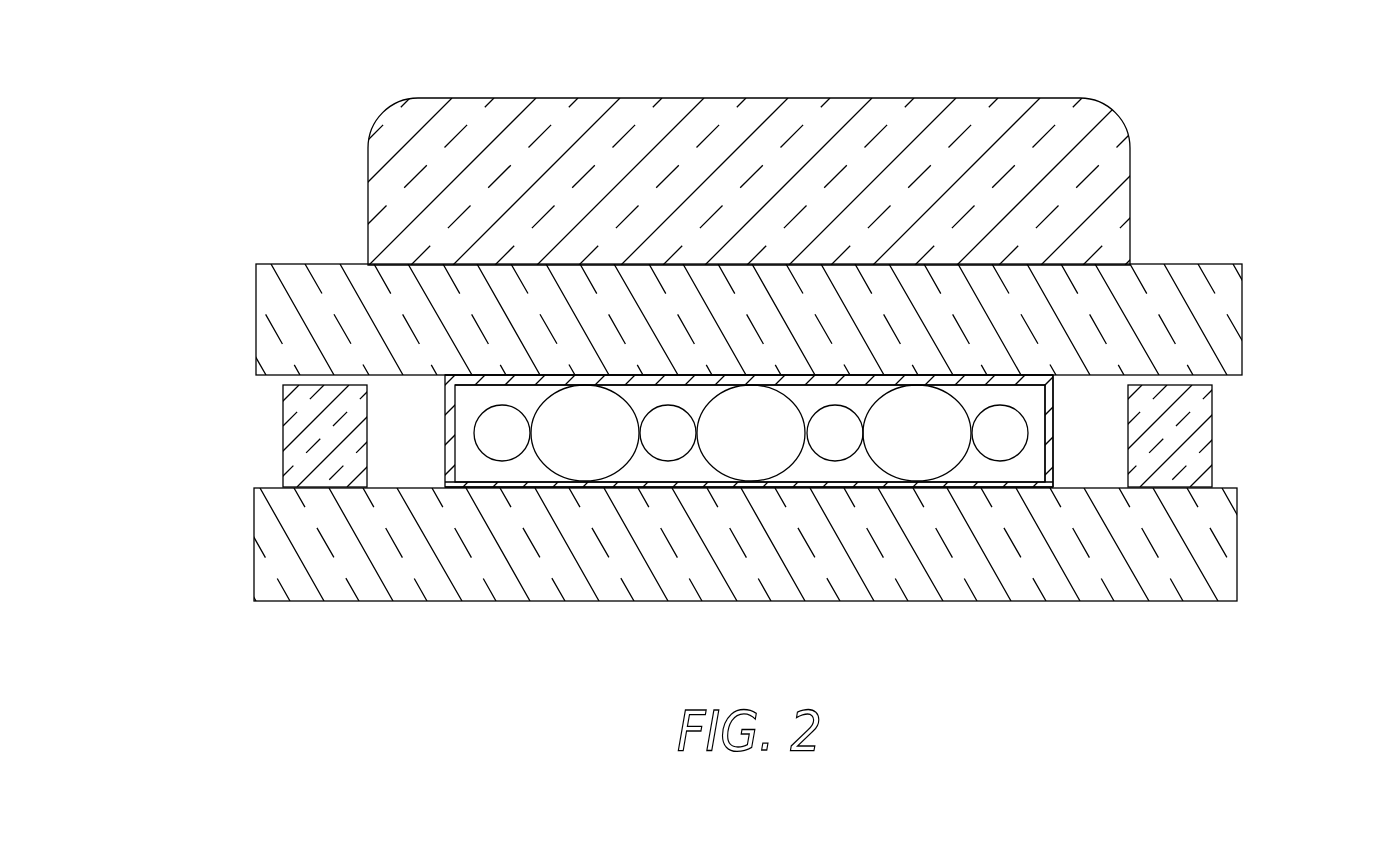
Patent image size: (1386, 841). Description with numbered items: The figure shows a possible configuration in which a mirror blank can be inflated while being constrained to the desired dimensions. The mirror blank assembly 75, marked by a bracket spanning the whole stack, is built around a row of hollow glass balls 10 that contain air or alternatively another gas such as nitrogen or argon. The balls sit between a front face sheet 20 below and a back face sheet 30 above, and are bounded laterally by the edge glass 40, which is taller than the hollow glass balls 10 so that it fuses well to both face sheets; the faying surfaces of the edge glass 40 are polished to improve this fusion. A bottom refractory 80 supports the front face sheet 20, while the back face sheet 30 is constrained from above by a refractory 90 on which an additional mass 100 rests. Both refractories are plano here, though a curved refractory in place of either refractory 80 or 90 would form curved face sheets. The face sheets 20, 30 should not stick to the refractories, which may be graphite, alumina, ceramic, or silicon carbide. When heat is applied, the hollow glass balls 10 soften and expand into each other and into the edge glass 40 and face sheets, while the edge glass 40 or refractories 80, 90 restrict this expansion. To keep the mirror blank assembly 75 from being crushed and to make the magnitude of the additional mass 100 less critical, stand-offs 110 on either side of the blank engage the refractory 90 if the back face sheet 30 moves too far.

The hollow glass balls 10 is at (463, 393).
The front face sheet 20 is at (472, 491).
The back face sheet 30 is at (1040, 368).
The edge glass 40 is at (1053, 438).
The mirror blank assembly 75 is at (123, 338).
The bottom refractory 80 is at (1227, 528).
The refractory 90 is at (1242, 310).
The additional mass 100 is at (738, 117).
The stand-offs 110 is at (283, 412).